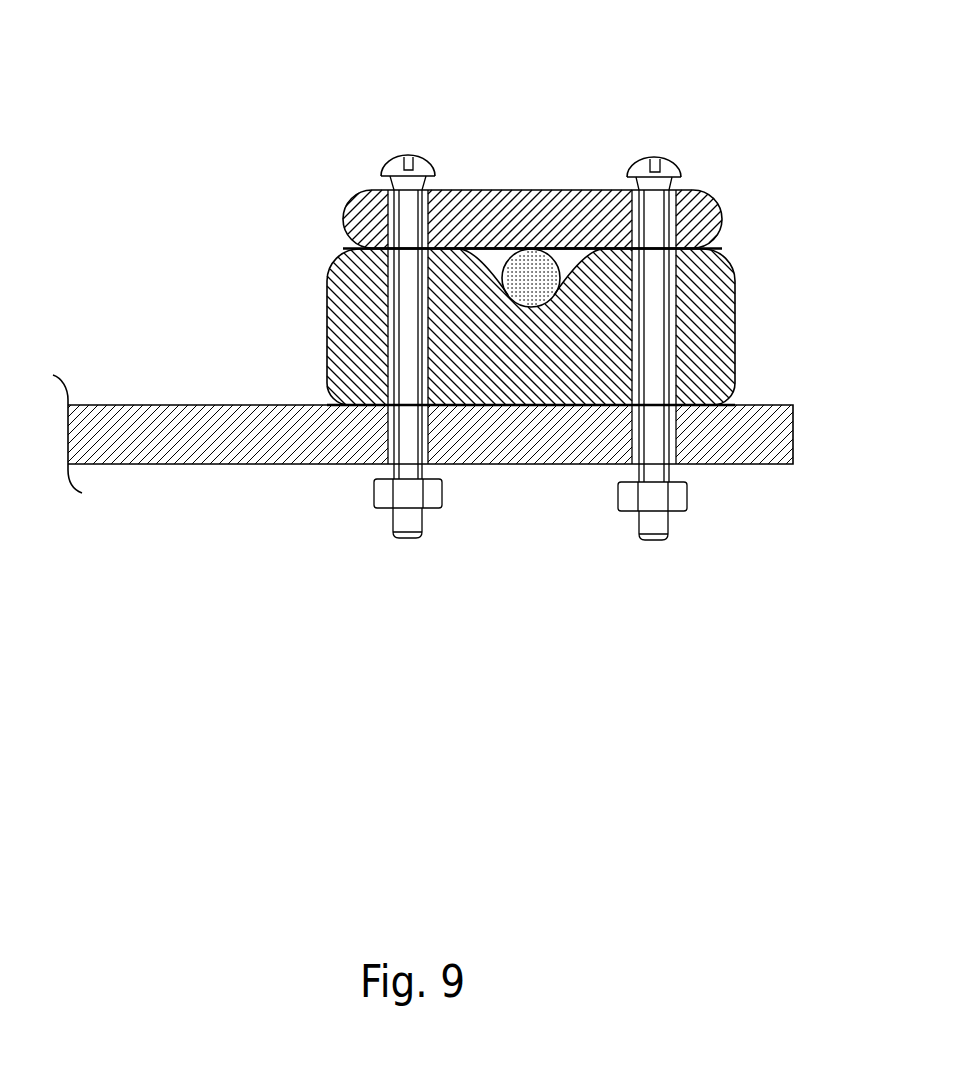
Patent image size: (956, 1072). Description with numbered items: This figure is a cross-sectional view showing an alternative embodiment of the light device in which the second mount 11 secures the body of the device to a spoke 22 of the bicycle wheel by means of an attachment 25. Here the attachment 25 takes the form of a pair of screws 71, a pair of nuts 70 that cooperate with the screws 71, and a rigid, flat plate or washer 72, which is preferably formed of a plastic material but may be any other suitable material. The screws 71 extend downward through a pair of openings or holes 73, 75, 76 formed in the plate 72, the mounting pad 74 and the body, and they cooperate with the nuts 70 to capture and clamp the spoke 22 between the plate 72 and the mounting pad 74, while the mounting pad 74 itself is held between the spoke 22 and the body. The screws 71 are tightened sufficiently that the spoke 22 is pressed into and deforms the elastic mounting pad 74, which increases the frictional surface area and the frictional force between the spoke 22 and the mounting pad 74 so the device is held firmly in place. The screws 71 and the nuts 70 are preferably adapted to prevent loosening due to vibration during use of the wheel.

The second mount 11 is at (327, 467).
The spoke 22 is at (531, 262).
The attachment 25 is at (386, 152).
The nut 70 is at (628, 512).
The screw 71 is at (668, 158).
The plate 72 is at (493, 190).
The hole 73 is at (383, 202).
The mounting pad 74 is at (327, 350).
The hole 75 is at (383, 332).
The hole 76 is at (385, 432).